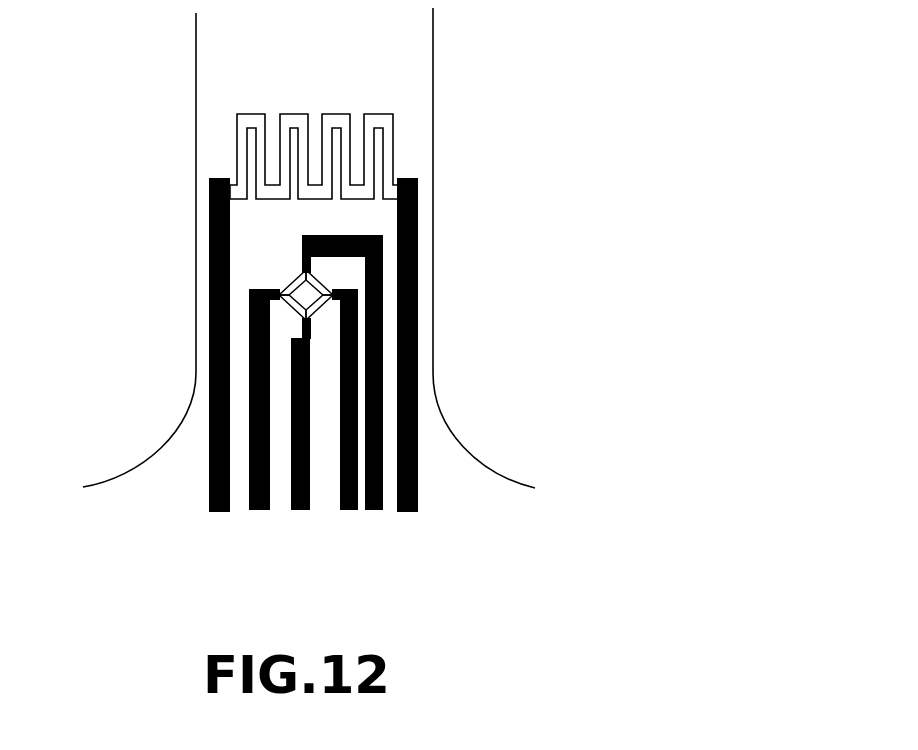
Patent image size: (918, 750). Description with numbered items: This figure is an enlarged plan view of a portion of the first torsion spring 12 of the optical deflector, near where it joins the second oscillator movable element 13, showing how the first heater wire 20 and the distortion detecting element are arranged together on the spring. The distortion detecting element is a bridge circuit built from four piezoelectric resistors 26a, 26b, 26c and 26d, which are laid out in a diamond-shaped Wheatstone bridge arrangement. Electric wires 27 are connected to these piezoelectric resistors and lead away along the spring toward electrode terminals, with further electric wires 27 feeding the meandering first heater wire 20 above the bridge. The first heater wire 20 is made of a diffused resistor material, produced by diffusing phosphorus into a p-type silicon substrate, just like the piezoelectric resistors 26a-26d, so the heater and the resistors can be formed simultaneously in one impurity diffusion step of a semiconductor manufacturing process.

The first torsion spring 12 is at (197, 50).
The second oscillator movable element 13 is at (110, 540).
The first heater wire 20 is at (386, 113).
The piezoelectric resistor 26a is at (288, 279).
The piezoelectric resistor 26b is at (285, 310).
The piezoelectric resistor 26c is at (325, 307).
The piezoelectric resistor 26d is at (318, 282).
The electric wires 27 is at (212, 249).